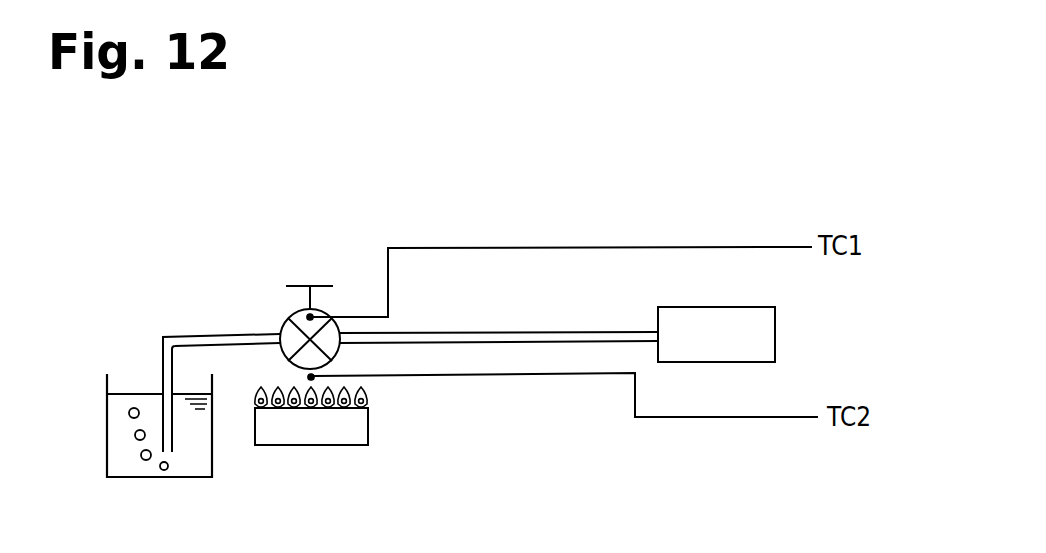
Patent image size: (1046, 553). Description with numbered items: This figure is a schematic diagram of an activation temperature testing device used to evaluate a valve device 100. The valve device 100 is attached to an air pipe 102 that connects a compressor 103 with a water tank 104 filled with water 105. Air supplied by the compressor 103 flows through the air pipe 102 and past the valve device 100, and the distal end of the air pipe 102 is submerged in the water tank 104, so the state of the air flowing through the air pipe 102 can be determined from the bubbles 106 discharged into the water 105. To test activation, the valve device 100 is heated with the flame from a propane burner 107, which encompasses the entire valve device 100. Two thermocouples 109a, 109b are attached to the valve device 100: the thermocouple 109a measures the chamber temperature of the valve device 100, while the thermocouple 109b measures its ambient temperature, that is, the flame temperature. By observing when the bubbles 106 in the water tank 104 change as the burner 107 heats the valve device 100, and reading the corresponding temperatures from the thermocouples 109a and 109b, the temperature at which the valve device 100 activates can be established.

The valve device 100 is at (298, 313).
The air pipe 102 is at (512, 332).
The compressor 103 is at (775, 326).
The water tank 104 is at (203, 477).
The water 105 is at (107, 440).
The bubbles 106 is at (142, 460).
The propane burner 107 is at (328, 445).
The thermocouple 109a is at (598, 247).
The thermocouple 109b is at (735, 418).